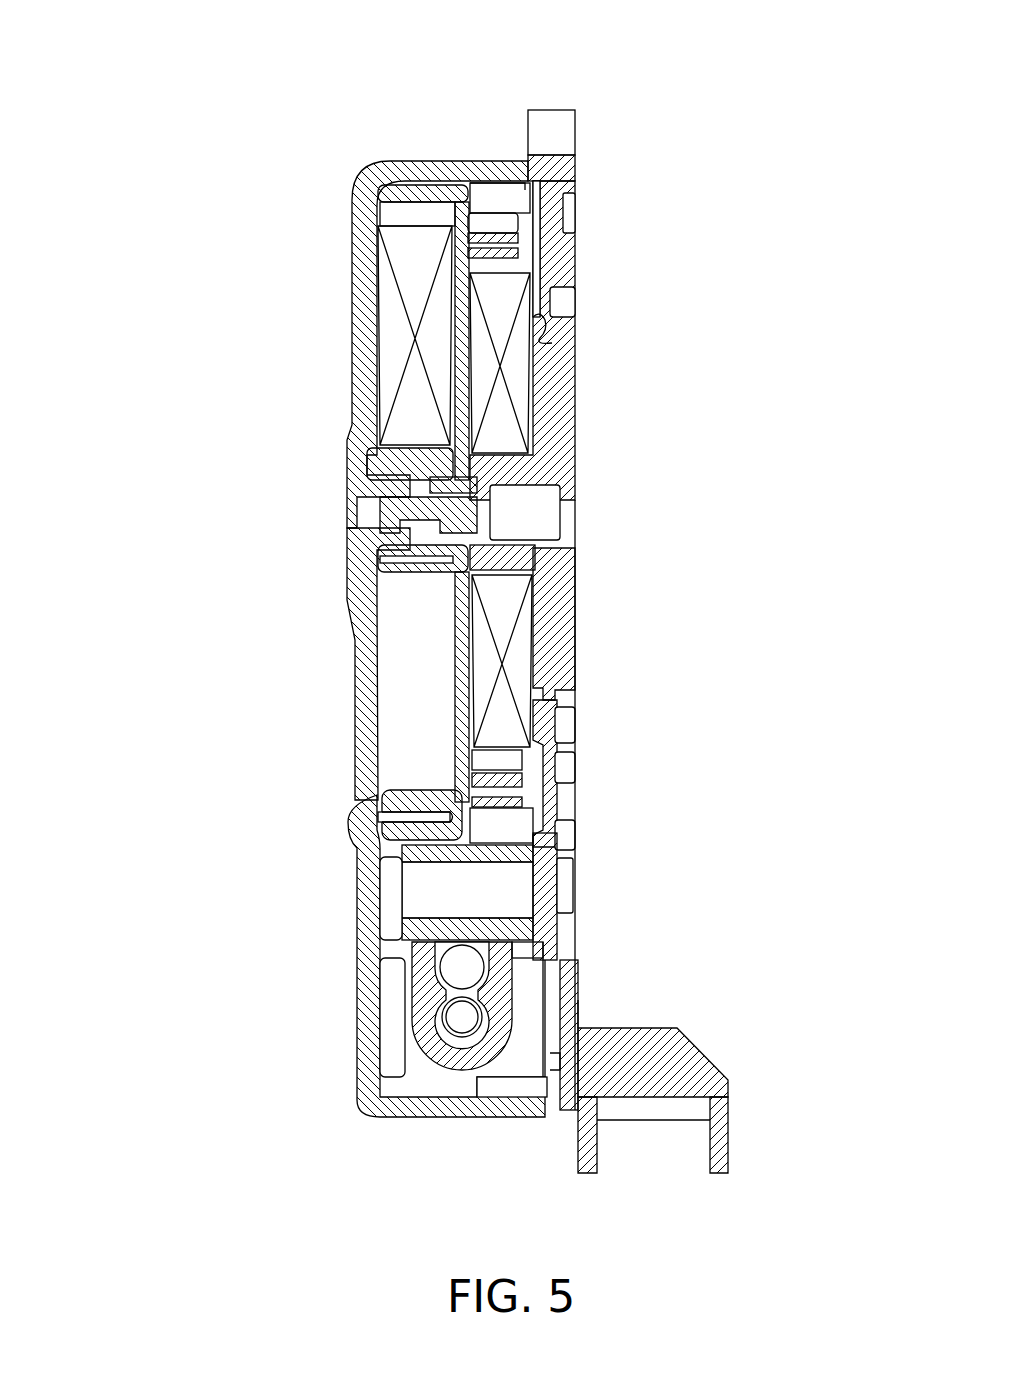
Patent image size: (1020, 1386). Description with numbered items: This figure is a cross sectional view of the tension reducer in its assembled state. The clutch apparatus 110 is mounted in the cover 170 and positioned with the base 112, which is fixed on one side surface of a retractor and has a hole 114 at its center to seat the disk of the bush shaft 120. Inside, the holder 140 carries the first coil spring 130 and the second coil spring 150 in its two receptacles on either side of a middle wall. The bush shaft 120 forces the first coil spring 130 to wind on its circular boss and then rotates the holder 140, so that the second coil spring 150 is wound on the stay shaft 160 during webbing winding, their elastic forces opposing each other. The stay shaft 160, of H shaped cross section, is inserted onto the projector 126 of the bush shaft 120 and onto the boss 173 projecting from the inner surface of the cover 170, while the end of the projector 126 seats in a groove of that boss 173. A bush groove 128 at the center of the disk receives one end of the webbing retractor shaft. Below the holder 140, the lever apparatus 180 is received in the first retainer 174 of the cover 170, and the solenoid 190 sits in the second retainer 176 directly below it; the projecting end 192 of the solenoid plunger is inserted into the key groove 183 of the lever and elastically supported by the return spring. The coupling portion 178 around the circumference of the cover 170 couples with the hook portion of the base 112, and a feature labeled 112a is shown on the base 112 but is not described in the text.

The clutch apparatus 110 is at (530, 205).
The base 112 is at (580, 262).
The groove 112a is at (592, 203).
The hole 114 is at (584, 350).
The bush shaft 120 is at (585, 625).
The projector 126 is at (357, 510).
The bush groove 128 is at (568, 500).
The first coil spring 130 is at (518, 387).
The holder 140 is at (471, 194).
The second coil spring 150 is at (400, 350).
The stay shaft 160 is at (393, 470).
The cover 170 is at (351, 300).
The boss 173 is at (358, 548).
The first retainer 174 is at (396, 888).
The second retainer 176 is at (393, 985).
The coupling portion 178 is at (521, 202).
The lever apparatus 180 is at (501, 842).
The key groove 183 is at (462, 955).
The solenoid 190 is at (403, 1034).
The projecting end 192 is at (440, 1050).